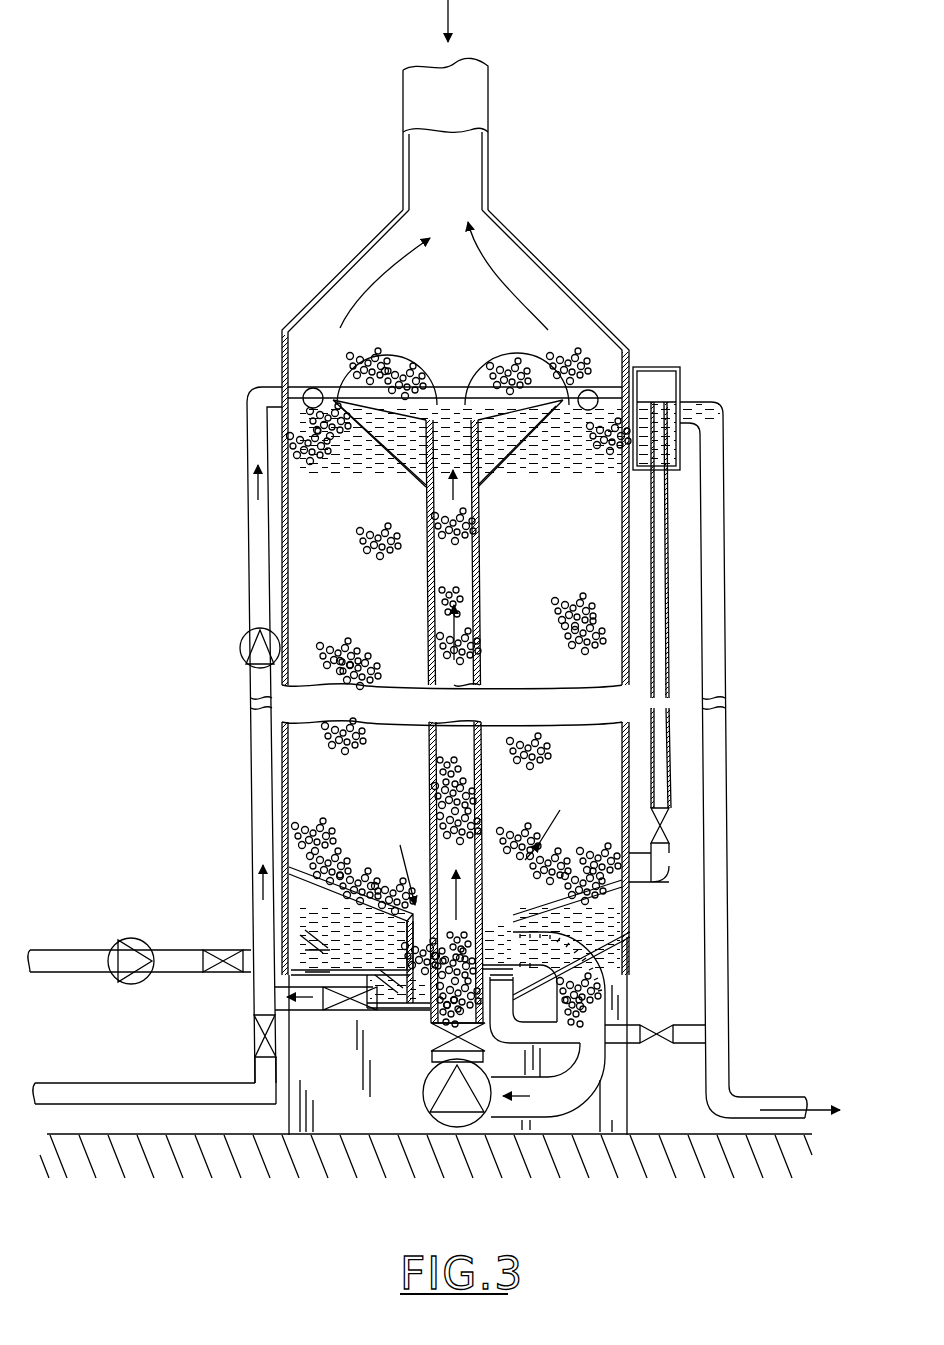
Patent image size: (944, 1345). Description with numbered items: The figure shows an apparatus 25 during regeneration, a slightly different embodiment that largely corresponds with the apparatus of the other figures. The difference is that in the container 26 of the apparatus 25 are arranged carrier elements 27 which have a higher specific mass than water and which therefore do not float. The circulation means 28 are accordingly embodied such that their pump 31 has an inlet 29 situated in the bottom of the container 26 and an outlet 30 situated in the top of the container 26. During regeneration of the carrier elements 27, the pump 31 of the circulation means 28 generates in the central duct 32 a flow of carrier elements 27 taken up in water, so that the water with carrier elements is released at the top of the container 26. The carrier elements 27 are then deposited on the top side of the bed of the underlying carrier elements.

The apparatus 25 is at (632, 150).
The container 26 is at (596, 322).
The carrier elements 27 is at (508, 378).
The circulation means 28 is at (432, 1126).
The inlet 29 is at (411, 1000).
The outlet 30 is at (441, 387).
The pump 31 is at (473, 1128).
The central duct 32 is at (481, 546).